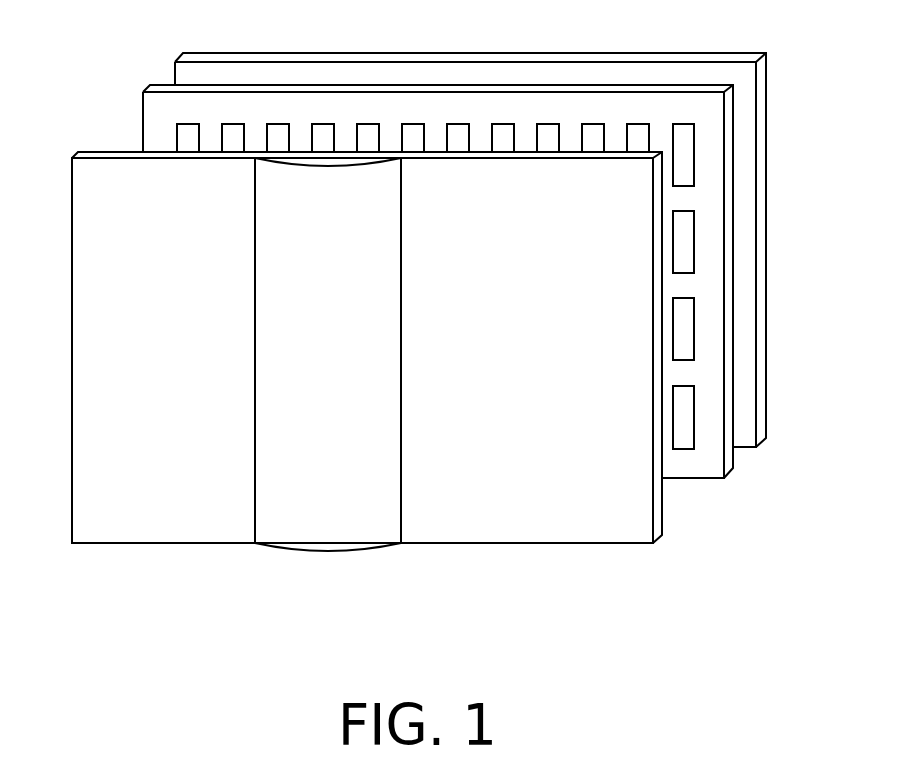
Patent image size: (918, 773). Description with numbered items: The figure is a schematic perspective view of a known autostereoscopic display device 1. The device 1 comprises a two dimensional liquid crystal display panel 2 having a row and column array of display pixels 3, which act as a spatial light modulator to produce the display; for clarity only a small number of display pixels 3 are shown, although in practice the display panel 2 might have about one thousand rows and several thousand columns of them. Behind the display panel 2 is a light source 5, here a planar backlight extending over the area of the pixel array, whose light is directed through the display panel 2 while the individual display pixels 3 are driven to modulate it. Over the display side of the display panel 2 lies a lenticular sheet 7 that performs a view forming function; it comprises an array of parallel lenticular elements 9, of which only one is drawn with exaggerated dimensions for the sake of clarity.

The autostereoscopic display device 1 is at (65, 82).
The liquid crystal display panel 2 is at (733, 460).
The display pixels 3 is at (694, 162).
The light source 5 is at (766, 412).
The lenticular sheet 7 is at (662, 520).
The lenticular elements 9 is at (326, 537).